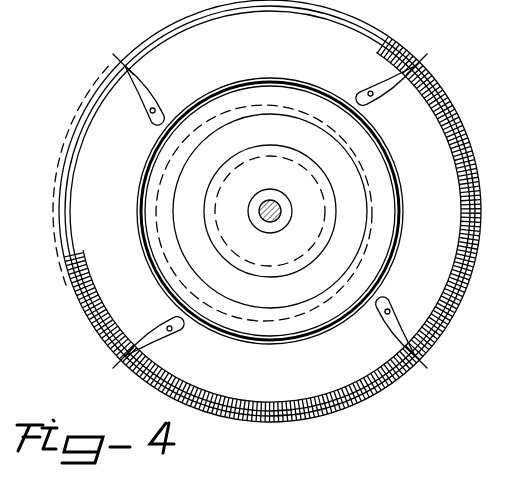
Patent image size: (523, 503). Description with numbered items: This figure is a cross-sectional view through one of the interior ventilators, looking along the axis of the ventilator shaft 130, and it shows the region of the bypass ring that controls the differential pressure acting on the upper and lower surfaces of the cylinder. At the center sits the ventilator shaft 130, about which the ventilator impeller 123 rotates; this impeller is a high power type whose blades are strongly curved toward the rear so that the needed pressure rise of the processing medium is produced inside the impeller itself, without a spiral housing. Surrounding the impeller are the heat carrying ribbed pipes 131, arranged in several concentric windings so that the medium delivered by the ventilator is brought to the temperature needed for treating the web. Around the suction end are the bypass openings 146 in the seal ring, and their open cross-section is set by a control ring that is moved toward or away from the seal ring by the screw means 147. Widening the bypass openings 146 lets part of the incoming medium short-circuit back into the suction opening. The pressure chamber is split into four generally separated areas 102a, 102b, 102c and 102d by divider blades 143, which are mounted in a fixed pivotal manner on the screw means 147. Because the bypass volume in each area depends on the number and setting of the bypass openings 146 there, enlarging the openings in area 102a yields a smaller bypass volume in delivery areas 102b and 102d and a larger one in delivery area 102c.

The separated area 102a is at (286, 51).
The separated area 102b is at (449, 224).
The separated area 102c is at (279, 386).
The separated area 102d is at (124, 217).
The ventilator impeller 123 is at (327, 332).
The ventilator shaft 130 is at (276, 203).
The ribbed pipes 131 is at (408, 70).
The divider blades 143 is at (149, 80).
The bypass openings 146 is at (398, 190).
The screw means 147 is at (390, 310).